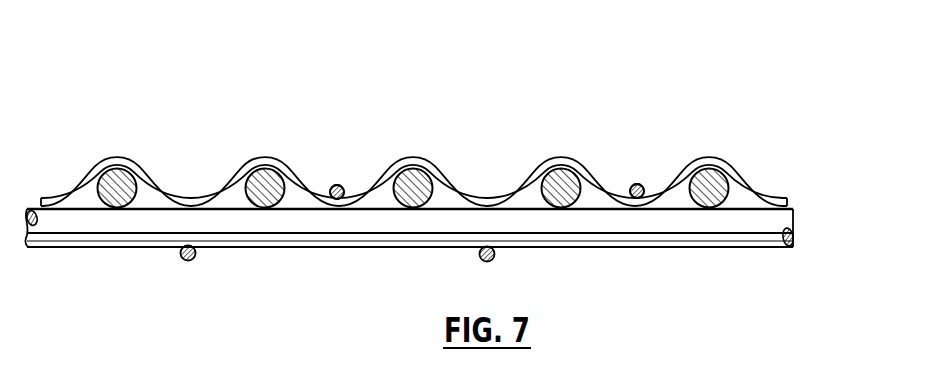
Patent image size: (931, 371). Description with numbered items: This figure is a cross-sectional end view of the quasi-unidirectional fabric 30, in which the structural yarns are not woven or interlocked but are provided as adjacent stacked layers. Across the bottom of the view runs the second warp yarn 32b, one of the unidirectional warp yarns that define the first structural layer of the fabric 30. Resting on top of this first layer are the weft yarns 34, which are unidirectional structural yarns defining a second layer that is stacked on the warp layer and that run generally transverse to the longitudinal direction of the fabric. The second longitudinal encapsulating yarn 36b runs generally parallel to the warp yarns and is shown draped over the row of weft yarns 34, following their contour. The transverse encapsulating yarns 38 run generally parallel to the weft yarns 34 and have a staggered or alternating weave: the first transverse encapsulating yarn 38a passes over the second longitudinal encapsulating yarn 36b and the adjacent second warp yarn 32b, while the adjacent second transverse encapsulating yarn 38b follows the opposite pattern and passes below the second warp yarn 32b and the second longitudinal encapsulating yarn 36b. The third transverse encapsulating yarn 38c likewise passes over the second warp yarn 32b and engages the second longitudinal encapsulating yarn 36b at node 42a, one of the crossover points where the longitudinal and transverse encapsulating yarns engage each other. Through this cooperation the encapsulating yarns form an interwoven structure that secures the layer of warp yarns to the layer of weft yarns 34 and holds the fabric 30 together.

The quasi-unidirectional fabric 30 is at (166, 55).
The second warp yarn 32b is at (770, 222).
The weft yarns 34 is at (112, 182).
The second longitudinal encapsulating yarn 36b is at (747, 191).
The transverse encapsulating yarns 38 is at (196, 255).
The first transverse encapsulating yarn 38a is at (335, 185).
The second transverse encapsulating yarn 38b is at (495, 256).
The third transverse encapsulating yarn 38c is at (634, 184).
The node 42a is at (627, 186).